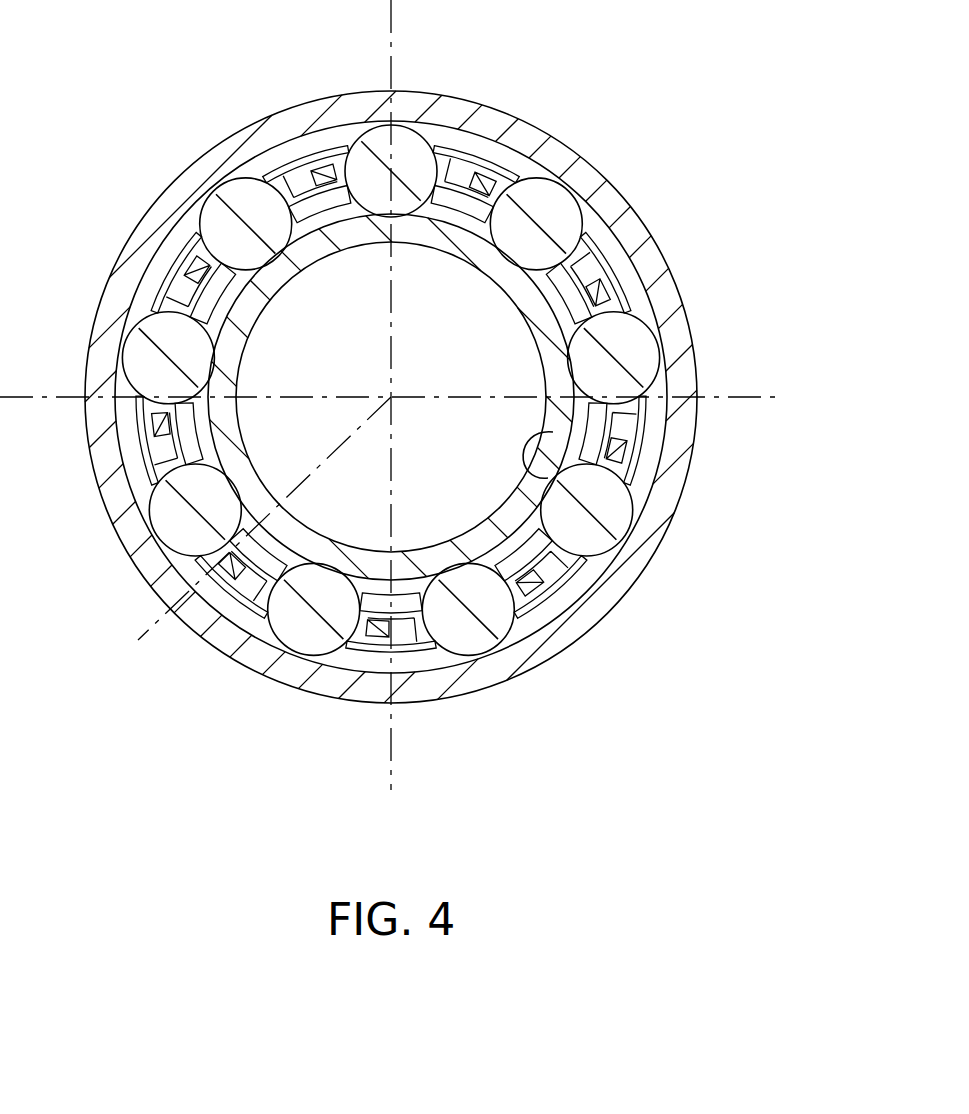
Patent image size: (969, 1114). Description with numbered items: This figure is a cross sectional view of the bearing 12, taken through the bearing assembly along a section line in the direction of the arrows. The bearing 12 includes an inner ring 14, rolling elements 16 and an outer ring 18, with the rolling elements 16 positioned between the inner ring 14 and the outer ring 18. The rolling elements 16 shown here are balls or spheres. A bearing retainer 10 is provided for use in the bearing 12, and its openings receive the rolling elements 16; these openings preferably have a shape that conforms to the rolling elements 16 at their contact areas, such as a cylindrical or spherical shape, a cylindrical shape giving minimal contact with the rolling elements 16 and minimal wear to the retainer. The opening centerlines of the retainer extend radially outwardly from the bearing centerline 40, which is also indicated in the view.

The bearing retainer 10 is at (316, 168).
The bearing 12 is at (424, 364).
The inner ring 14 is at (548, 478).
The rolling elements 16 is at (618, 347).
The outer ring 18 is at (602, 170).
The bearing centerline 40 is at (247, 529).